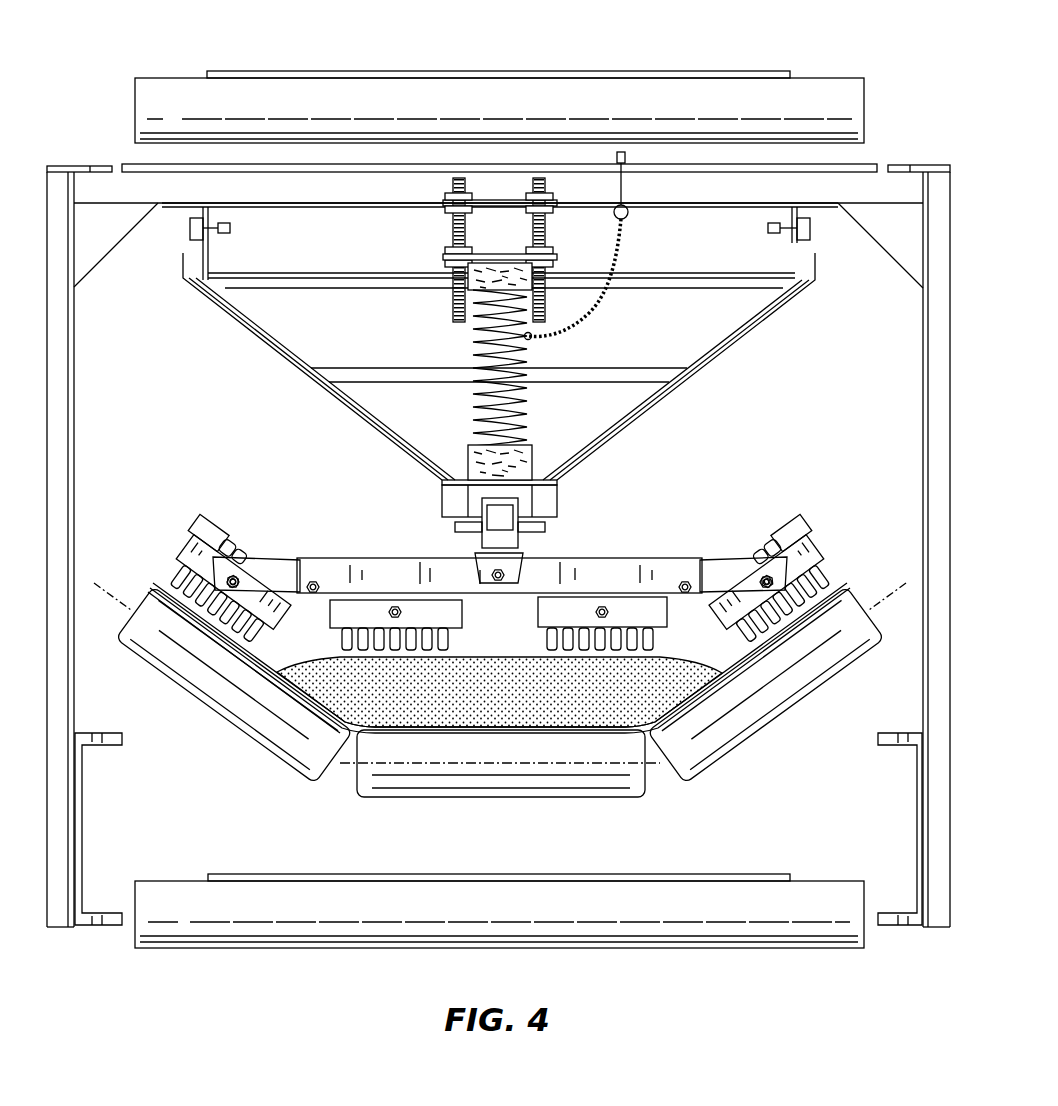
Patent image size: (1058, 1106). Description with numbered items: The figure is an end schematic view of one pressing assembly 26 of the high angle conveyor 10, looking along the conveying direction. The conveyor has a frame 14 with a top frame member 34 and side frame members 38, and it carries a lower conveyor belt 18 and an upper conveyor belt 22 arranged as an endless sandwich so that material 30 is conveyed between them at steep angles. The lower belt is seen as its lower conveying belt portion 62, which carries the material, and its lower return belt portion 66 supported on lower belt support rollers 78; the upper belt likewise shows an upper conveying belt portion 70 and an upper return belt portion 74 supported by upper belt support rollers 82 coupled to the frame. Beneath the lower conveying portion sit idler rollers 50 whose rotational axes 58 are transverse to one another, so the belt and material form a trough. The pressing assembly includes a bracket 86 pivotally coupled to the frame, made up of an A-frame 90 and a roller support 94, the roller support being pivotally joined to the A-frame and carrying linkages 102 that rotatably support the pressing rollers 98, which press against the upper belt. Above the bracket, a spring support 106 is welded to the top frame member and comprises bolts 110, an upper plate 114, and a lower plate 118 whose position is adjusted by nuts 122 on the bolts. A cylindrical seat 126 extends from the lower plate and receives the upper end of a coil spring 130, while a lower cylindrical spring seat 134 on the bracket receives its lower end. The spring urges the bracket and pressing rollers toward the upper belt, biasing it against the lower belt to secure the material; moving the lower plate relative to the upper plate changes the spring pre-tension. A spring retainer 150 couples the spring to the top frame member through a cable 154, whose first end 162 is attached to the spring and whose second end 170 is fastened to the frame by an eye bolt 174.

The high angle conveyor 10 is at (118, 55).
The frame 14 is at (882, 185).
The lower conveyor belt 18 is at (499, 794).
The upper conveyor belt 22 is at (499, 404).
The pressing assembly 26 is at (757, 438).
The material 30 is at (445, 690).
The top frame member 34 is at (498, 183).
The side frame member 38 is at (498, 549).
The idler roller 50 is at (208, 695).
The rotational axis 58 is at (635, 808).
The lower conveying belt portion 62 is at (262, 730).
The lower return belt portion 66 is at (222, 873).
The upper conveying belt portion 70 is at (672, 660).
The upper return belt portion 74 is at (298, 72).
The lower belt support roller 78 is at (733, 935).
The upper belt support roller 82 is at (818, 95).
The bracket 86 is at (210, 392).
The A-frame 90 is at (262, 338).
The roller support 94 is at (608, 575).
The pressing roller 98 is at (215, 540).
The linkage 102 is at (255, 575).
The spring support 106 is at (410, 258).
The bolt 110 is at (457, 322).
The upper plate 114 is at (497, 202).
The lower plate 118 is at (447, 258).
The nut 122 is at (455, 247).
The cylindrical seat 126 is at (452, 278).
The spring 130 is at (475, 405).
The lower cylindrical spring seat 134 is at (533, 458).
The spring retainer 150 is at (658, 348).
The cable 154 is at (627, 262).
The first end 162 is at (536, 344).
The second end 170 is at (627, 240).
The eye bolt 174 is at (629, 214).